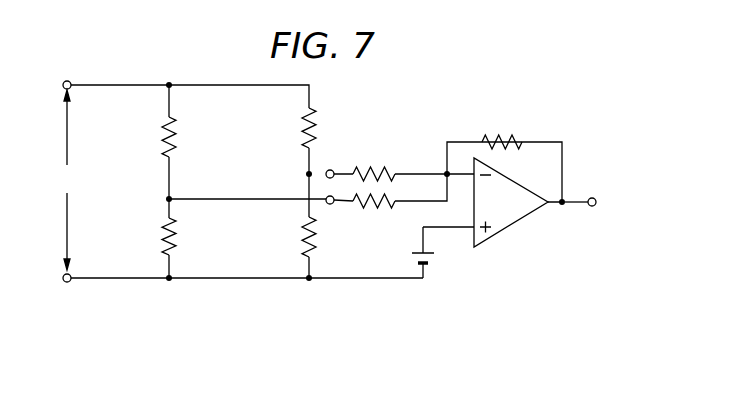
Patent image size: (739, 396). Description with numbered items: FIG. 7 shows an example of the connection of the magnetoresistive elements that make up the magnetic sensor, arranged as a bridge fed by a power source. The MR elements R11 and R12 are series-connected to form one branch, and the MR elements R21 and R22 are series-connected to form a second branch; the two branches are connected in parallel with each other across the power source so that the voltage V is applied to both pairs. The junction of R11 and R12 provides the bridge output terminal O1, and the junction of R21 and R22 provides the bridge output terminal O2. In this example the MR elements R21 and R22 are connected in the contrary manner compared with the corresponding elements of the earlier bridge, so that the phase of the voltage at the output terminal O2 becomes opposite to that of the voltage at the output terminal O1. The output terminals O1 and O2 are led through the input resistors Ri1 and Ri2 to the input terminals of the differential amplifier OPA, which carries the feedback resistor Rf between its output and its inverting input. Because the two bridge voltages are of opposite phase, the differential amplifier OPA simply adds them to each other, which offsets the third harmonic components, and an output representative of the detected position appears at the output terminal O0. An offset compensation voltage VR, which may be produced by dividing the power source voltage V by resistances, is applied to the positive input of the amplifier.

The voltage V is at (64, 180).
The MR element R11 is at (153, 137).
The MR element R12 is at (153, 236).
The MR element R21 is at (294, 128).
The MR element R22 is at (291, 237).
The resistor Ri1 is at (374, 214).
The resistor Ri2 is at (374, 161).
The feedback resistor Rf is at (502, 128).
The output terminal O1 is at (331, 206).
The output terminal O2 is at (331, 168).
The differential amplifier OPA is at (508, 228).
The output terminal O0 is at (590, 208).
The offset compensation voltage VR is at (433, 260).